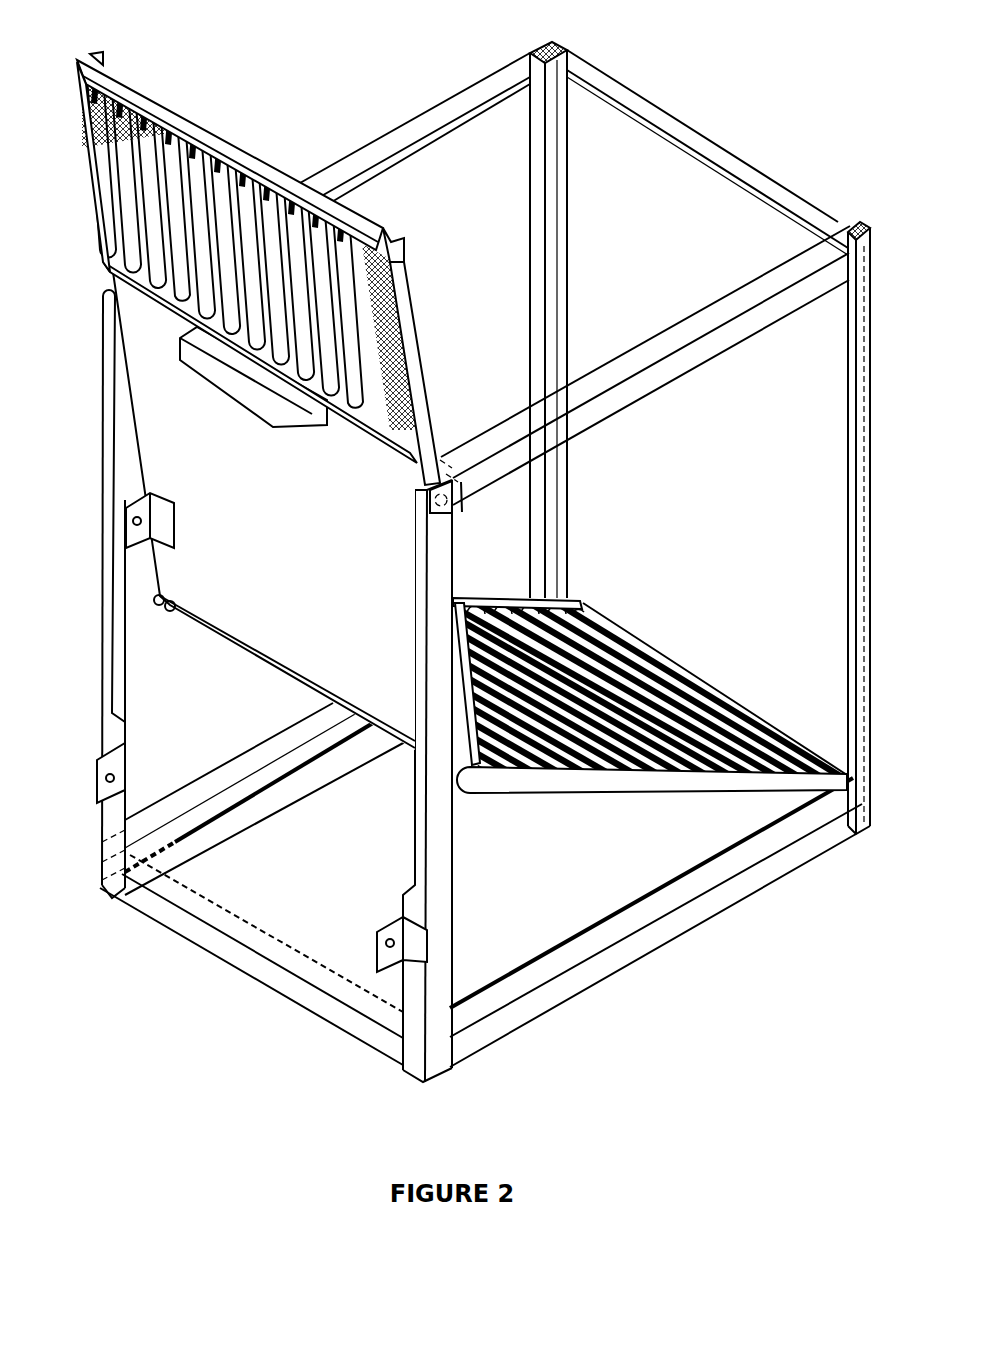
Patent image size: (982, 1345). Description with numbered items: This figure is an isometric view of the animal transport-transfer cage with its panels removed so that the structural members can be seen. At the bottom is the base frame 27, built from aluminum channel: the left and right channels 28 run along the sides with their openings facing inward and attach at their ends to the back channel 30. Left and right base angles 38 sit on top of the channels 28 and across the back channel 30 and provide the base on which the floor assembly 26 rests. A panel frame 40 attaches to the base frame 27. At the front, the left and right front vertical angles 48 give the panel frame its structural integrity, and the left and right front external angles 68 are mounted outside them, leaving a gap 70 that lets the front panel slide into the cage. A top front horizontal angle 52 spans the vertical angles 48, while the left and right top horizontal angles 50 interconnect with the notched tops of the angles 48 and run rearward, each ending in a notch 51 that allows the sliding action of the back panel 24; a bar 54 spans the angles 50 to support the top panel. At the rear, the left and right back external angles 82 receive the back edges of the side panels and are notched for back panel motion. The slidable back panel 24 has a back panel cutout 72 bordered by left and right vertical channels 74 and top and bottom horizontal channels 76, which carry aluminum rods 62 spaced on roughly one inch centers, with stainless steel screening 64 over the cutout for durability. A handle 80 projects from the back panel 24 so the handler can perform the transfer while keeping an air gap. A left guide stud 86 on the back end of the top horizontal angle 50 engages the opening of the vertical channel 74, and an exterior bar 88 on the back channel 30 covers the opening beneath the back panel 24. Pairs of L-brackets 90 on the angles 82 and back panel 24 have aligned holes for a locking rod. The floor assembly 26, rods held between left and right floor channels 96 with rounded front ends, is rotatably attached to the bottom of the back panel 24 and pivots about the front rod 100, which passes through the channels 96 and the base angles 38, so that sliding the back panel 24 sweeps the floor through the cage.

The back panel 24 is at (246, 543).
The floor assembly 26 is at (510, 686).
The base frame 27 is at (656, 920).
The left and right channels 28 is at (493, 885).
The back channel 30 is at (251, 969).
The left and right base angles 38 is at (489, 864).
The panel frame 40 is at (415, 129).
The left and right front vertical angles 48 is at (526, 324).
The left and right top horizontal angles 50 is at (634, 323).
The notch 51 is at (458, 453).
The top front horizontal angle 52 is at (707, 152).
The bar 54 is at (483, 505).
The aluminum rod 62 is at (208, 242).
The stainless steel screening 64 is at (225, 254).
The left and right front external angles 68 is at (856, 404).
The gap 70 is at (703, 127).
The back panel cutout 72 is at (247, 262).
The left and right vertical channels 74 is at (420, 356).
The top and bottom horizontal channels 76 is at (230, 151).
The handle 80 is at (253, 383).
The left and right back external angles 82 is at (283, 686).
The left guide stud 86 is at (413, 512).
The exterior bar 88 is at (266, 933).
The L-brackets 90 is at (272, 732).
The left and right floor channels 96 is at (652, 795).
The front rod 100 is at (715, 689).